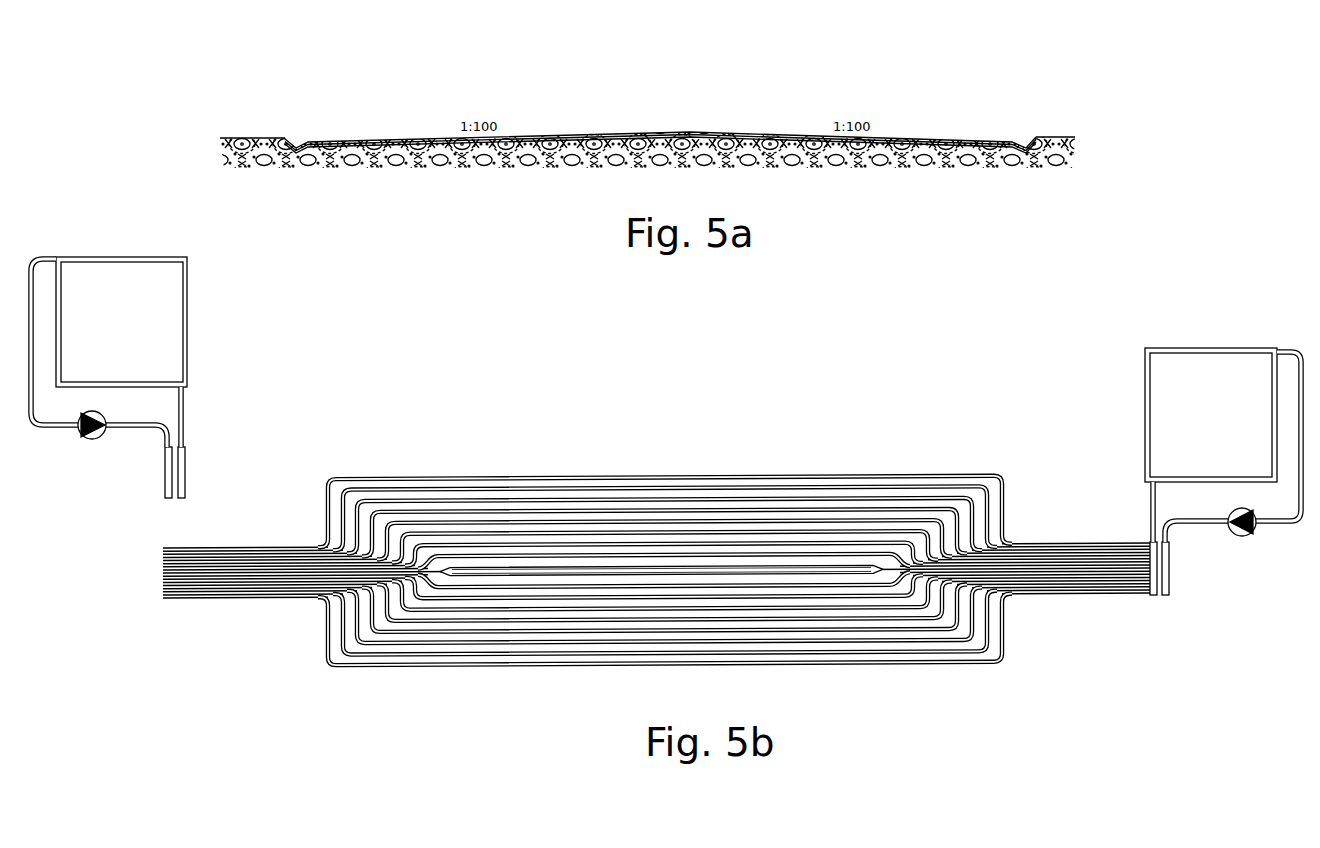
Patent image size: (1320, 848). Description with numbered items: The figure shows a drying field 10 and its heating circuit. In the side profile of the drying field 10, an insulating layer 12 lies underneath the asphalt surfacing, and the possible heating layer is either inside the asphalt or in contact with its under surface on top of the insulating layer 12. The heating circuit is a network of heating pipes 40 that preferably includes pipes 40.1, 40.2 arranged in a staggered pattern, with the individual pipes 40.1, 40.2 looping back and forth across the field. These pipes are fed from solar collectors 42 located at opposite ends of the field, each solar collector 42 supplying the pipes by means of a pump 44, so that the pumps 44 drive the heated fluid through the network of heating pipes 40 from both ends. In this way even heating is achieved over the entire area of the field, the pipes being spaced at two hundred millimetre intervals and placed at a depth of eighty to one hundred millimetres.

In FIG. 5A, the drying field 10 is at (615, 138).
In FIG. 5A, the insulating layer 12 is at (762, 131).
In FIG. 5B, the network of heating pipes 40 is at (666, 577).
In FIG. 5B, the pipe 40.1 is at (882, 666).
In FIG. 5B, the pipe 40.2 is at (626, 655).
In FIG. 5B, the solar collector 42 is at (138, 438).
In FIG. 5B, the pump 44 is at (90, 525).